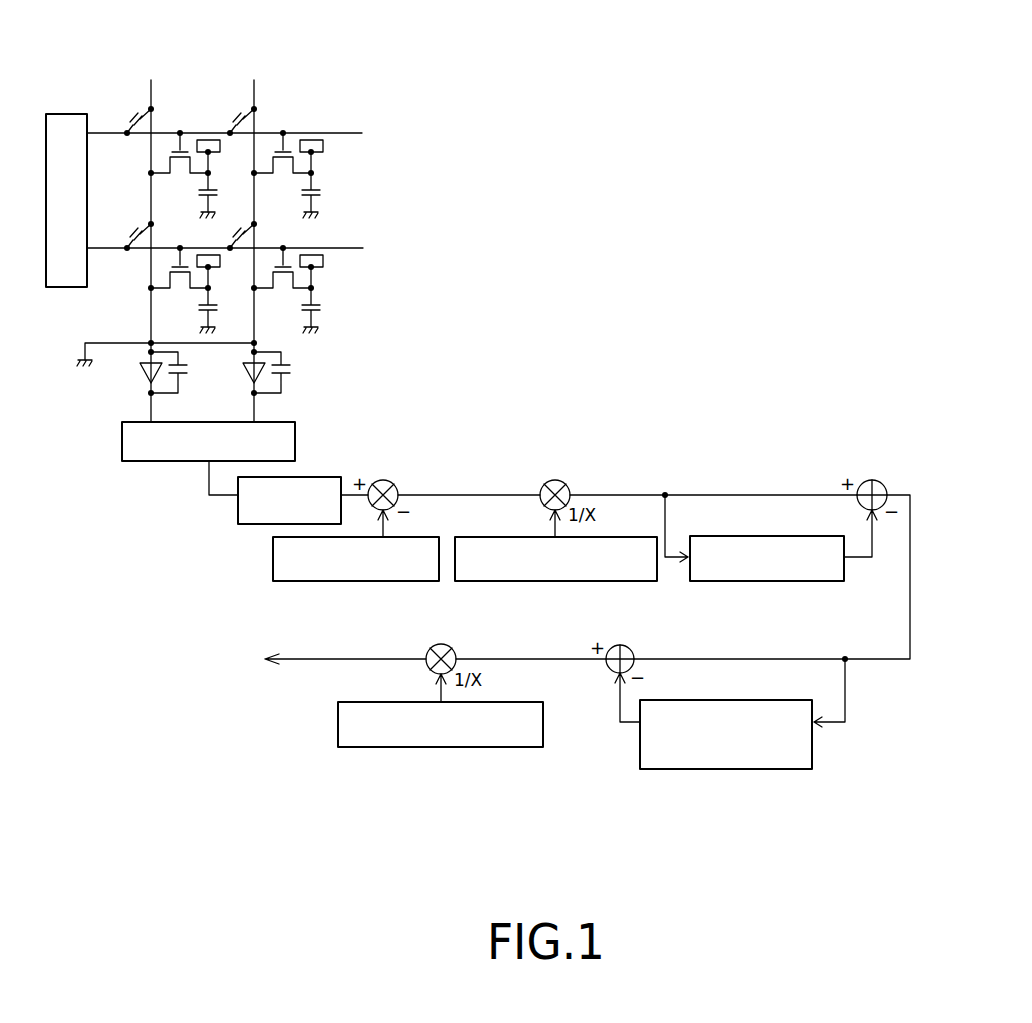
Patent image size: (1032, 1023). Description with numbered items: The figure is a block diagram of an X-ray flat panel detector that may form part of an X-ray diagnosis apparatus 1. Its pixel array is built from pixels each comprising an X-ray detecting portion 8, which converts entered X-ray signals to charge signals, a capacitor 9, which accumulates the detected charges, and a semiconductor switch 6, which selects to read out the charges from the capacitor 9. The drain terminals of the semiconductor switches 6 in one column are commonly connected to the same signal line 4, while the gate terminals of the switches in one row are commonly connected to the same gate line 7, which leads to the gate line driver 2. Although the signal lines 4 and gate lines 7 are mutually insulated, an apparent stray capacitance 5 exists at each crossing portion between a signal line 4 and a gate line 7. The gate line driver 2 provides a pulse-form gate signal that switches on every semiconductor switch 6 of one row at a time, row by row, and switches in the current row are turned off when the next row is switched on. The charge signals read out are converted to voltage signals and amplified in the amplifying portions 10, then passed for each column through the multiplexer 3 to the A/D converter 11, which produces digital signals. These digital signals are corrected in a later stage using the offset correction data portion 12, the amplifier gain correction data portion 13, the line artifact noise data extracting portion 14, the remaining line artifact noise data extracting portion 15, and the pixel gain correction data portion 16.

The X-ray diagnosis apparatus 1 is at (412, 803).
The gate line driver 2 is at (64, 113).
The multiplexer 3 is at (172, 462).
The signal line 4 is at (254, 90).
The apparent stray capacitance 5 is at (248, 124).
The semiconductor switch 6 is at (290, 165).
The gate line 7 is at (345, 133).
The X-ray detecting portion 8 is at (322, 146).
The capacitor 9 is at (320, 190).
The amplifying portion 10 is at (290, 390).
The analog to digital converter 11 is at (262, 525).
The offset correction data portion 12 is at (438, 583).
The amplifier gain correction data portion 13 is at (553, 583).
The line artifact noise data extracting portion 14 is at (718, 583).
The remaining line artifact noise data extracting portion 15 is at (728, 771).
The pixel gain correction data portion 16 is at (427, 748).